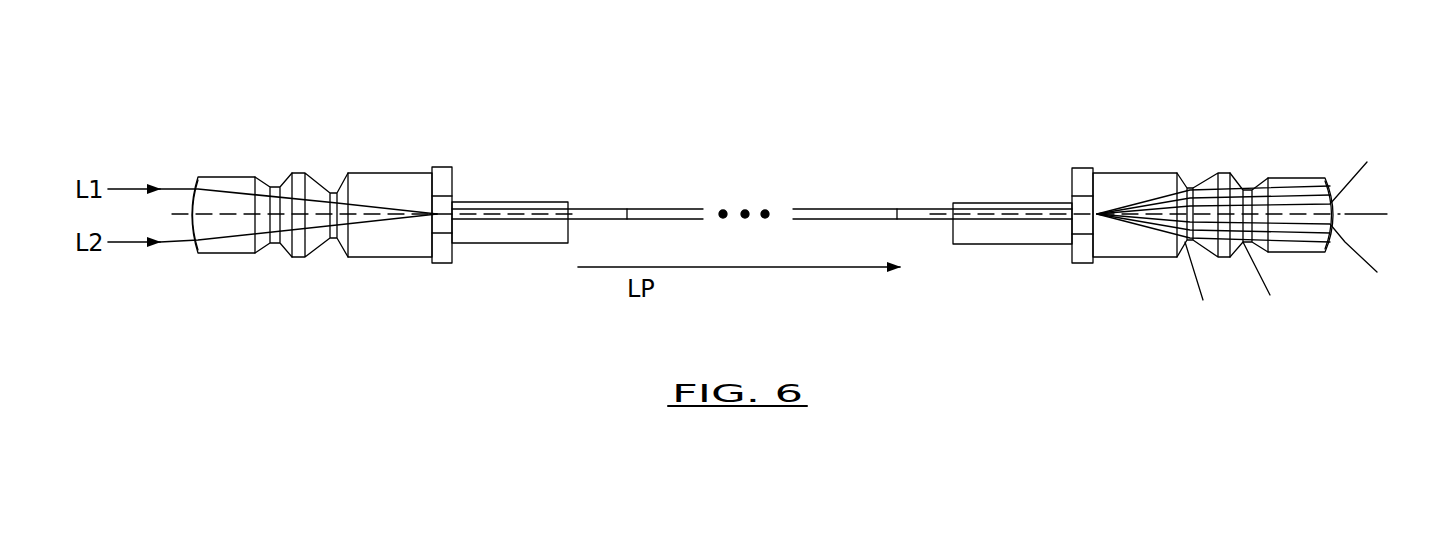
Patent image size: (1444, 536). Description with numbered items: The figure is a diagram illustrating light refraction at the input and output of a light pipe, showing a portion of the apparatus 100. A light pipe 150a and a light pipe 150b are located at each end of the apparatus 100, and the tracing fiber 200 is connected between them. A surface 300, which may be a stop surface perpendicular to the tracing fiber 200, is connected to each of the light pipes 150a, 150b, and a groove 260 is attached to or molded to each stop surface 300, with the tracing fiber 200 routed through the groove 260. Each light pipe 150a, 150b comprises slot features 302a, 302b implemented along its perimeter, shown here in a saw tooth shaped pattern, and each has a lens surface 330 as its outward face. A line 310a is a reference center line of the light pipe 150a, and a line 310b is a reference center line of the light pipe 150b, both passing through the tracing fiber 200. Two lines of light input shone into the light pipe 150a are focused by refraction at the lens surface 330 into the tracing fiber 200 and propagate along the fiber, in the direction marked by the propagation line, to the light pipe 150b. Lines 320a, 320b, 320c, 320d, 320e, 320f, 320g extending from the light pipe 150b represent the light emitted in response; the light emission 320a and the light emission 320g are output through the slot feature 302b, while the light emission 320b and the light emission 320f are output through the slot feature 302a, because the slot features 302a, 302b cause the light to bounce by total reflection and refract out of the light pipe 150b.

The apparatus 100 is at (682, 70).
The light pipe 150a is at (213, 175).
The light pipe 150b is at (1293, 176).
The tracing fiber 200 is at (843, 208).
The groove 260 is at (487, 245).
The surface 300 is at (455, 182).
The slot feature 302a is at (277, 187).
The slot feature 302b is at (332, 238).
The line 310a is at (373, 213).
The line 310b is at (998, 213).
The light emission 320a is at (1191, 185).
The light emission 320b is at (1247, 183).
The line 320c is at (1368, 160).
The line 320d is at (1370, 214).
The line 320e is at (1402, 250).
The light emission 320f is at (1270, 295).
The light emission 320g is at (1190, 272).
The lens surface 330 is at (192, 222).